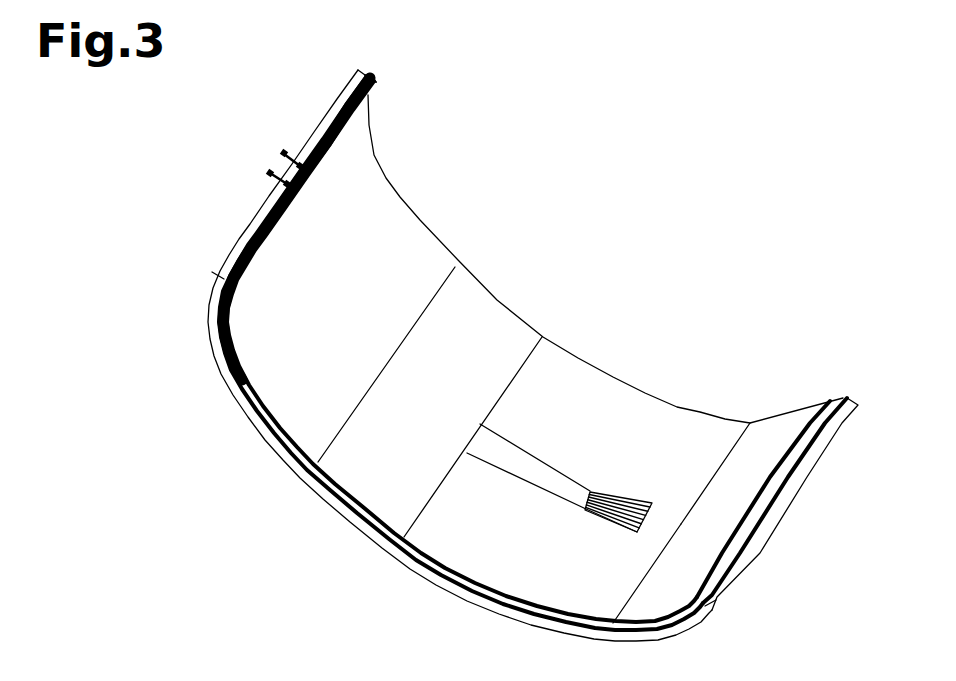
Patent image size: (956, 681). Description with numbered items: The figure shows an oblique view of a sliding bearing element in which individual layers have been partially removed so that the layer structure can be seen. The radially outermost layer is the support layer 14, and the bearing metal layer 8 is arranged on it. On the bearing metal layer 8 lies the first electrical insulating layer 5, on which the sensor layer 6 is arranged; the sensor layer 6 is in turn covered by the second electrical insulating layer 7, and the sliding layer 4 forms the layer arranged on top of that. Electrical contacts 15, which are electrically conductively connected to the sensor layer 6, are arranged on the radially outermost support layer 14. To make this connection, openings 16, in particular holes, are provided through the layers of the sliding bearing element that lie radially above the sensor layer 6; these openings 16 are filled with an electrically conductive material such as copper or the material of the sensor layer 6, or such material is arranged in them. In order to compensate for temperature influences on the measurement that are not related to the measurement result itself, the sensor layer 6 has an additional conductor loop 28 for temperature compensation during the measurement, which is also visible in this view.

The sliding layer 4 is at (382, 247).
The first electrical insulating layer 5 is at (648, 576).
The sensor layer 6 is at (592, 406).
The second electrical insulating layer 7 is at (456, 336).
The bearing metal layer 8 is at (676, 603).
The support layer 14 is at (836, 405).
The electrical contacts 15 is at (283, 151).
The openings 16 is at (302, 158).
The conductor loop 28 is at (527, 428).